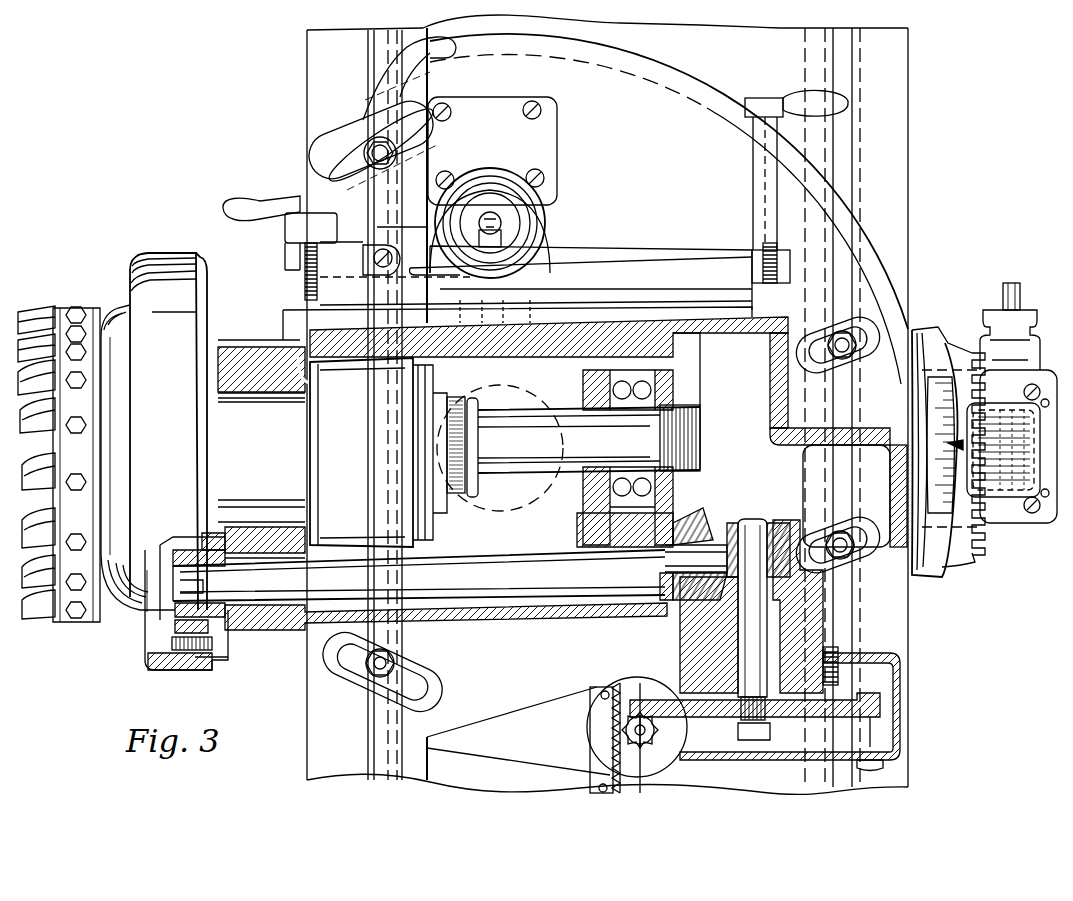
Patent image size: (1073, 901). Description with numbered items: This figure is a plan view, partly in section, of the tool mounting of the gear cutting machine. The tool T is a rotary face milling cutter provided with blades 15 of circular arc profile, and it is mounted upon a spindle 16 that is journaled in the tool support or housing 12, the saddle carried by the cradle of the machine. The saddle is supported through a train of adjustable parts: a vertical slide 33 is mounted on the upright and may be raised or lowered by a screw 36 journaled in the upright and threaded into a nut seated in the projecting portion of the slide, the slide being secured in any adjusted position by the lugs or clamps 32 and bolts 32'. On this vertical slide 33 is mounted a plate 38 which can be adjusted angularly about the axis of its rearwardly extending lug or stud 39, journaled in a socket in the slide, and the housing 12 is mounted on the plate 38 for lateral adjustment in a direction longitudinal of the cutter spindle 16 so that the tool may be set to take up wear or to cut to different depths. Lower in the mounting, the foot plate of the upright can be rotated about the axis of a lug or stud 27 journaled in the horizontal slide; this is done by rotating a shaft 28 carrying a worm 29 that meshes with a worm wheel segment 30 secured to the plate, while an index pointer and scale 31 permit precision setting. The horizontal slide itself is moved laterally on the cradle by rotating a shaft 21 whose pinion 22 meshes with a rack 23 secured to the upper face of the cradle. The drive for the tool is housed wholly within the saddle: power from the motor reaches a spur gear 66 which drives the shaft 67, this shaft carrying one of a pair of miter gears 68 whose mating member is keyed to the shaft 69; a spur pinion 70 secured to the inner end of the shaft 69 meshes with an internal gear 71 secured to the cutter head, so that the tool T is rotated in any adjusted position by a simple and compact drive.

The tool T is at (59, 313).
The blades 15 is at (22, 322).
The tool support or housing 12 is at (267, 350).
The plate 38 is at (290, 322).
The lug or stud 39 is at (553, 291).
The vertical slide 33 is at (605, 267).
The screw 36 is at (503, 223).
The bolts 32' is at (535, 143).
The lugs or clamps 32 is at (513, 264).
The spindle 16 is at (520, 417).
The lug or stud 27 is at (518, 500).
The shaft 69 is at (460, 572).
The spur pinion 70 is at (178, 610).
The internal gear 71 is at (180, 640).
The miter gears 68 is at (707, 513).
The shaft 67 is at (750, 523).
The spur gear 66 is at (880, 705).
The shaft 21 is at (630, 727).
The pinion 22 is at (645, 736).
The rack 23 is at (620, 785).
The worm wheel segment 30 is at (963, 540).
The index pointer and scale 31 is at (950, 480).
The worm 29 is at (1008, 468).
The shaft 28 is at (1021, 291).